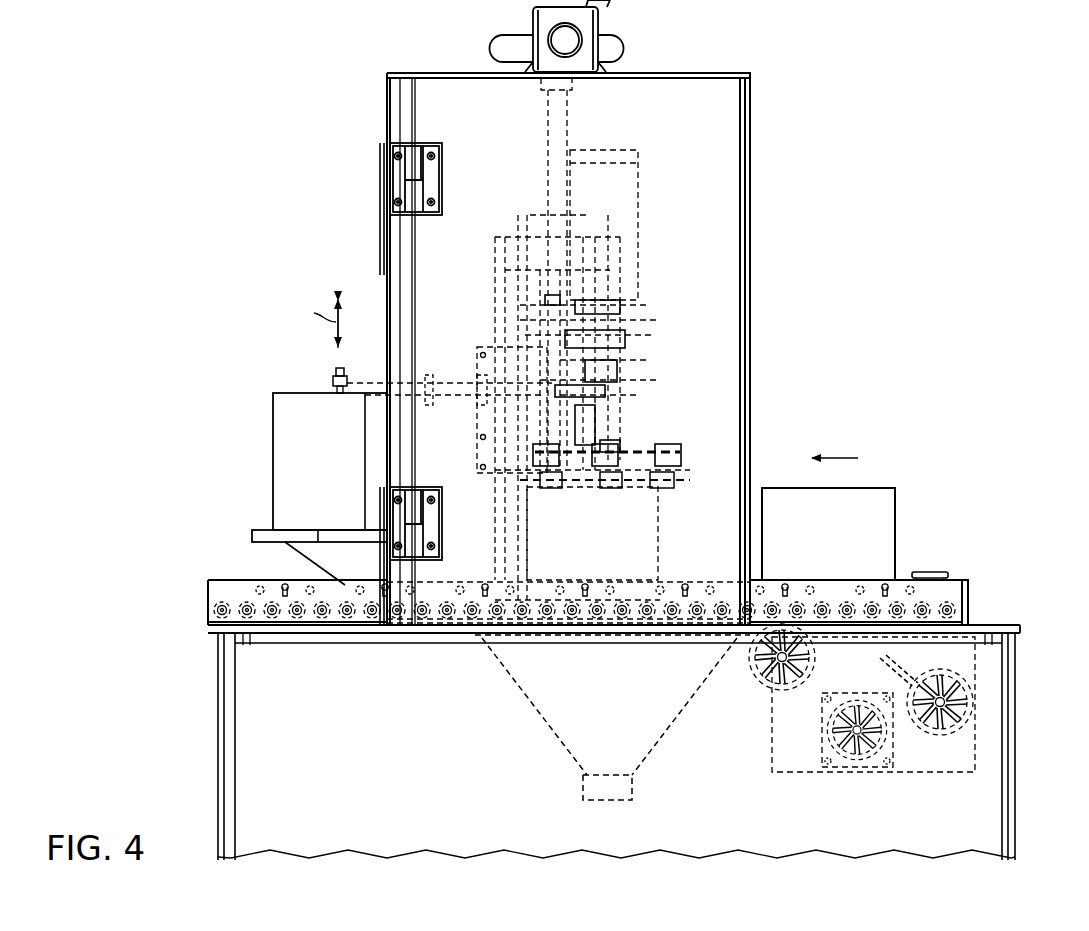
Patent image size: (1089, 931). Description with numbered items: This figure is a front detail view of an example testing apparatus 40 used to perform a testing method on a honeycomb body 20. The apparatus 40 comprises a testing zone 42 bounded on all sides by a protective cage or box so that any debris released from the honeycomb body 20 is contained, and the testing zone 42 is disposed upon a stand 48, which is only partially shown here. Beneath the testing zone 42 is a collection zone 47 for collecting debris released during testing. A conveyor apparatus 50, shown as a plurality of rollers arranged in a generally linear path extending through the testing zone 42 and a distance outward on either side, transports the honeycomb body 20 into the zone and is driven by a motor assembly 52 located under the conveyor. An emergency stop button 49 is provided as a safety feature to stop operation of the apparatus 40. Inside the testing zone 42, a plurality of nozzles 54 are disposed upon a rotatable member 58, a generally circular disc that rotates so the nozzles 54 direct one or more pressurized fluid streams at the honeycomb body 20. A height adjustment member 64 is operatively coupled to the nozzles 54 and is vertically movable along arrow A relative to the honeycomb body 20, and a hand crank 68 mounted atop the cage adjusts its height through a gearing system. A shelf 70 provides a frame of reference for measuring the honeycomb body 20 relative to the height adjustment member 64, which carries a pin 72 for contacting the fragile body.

The testing apparatus 40 is at (226, 189).
The testing zone 42 is at (752, 140).
The hand crank 68 is at (628, 47).
The nozzles 54 is at (680, 452).
The rotatable member 58 is at (690, 480).
The honeycomb body 20 is at (658, 566).
The shelf 70 is at (252, 535).
The pin 72 is at (336, 368).
The height adjustment member 64 is at (368, 384).
The conveyor apparatus 50 is at (972, 588).
The emergency stop button 49 is at (934, 572).
The stand 48 is at (218, 741).
The collection zone 47 is at (538, 717).
The motor assembly 52 is at (914, 752).